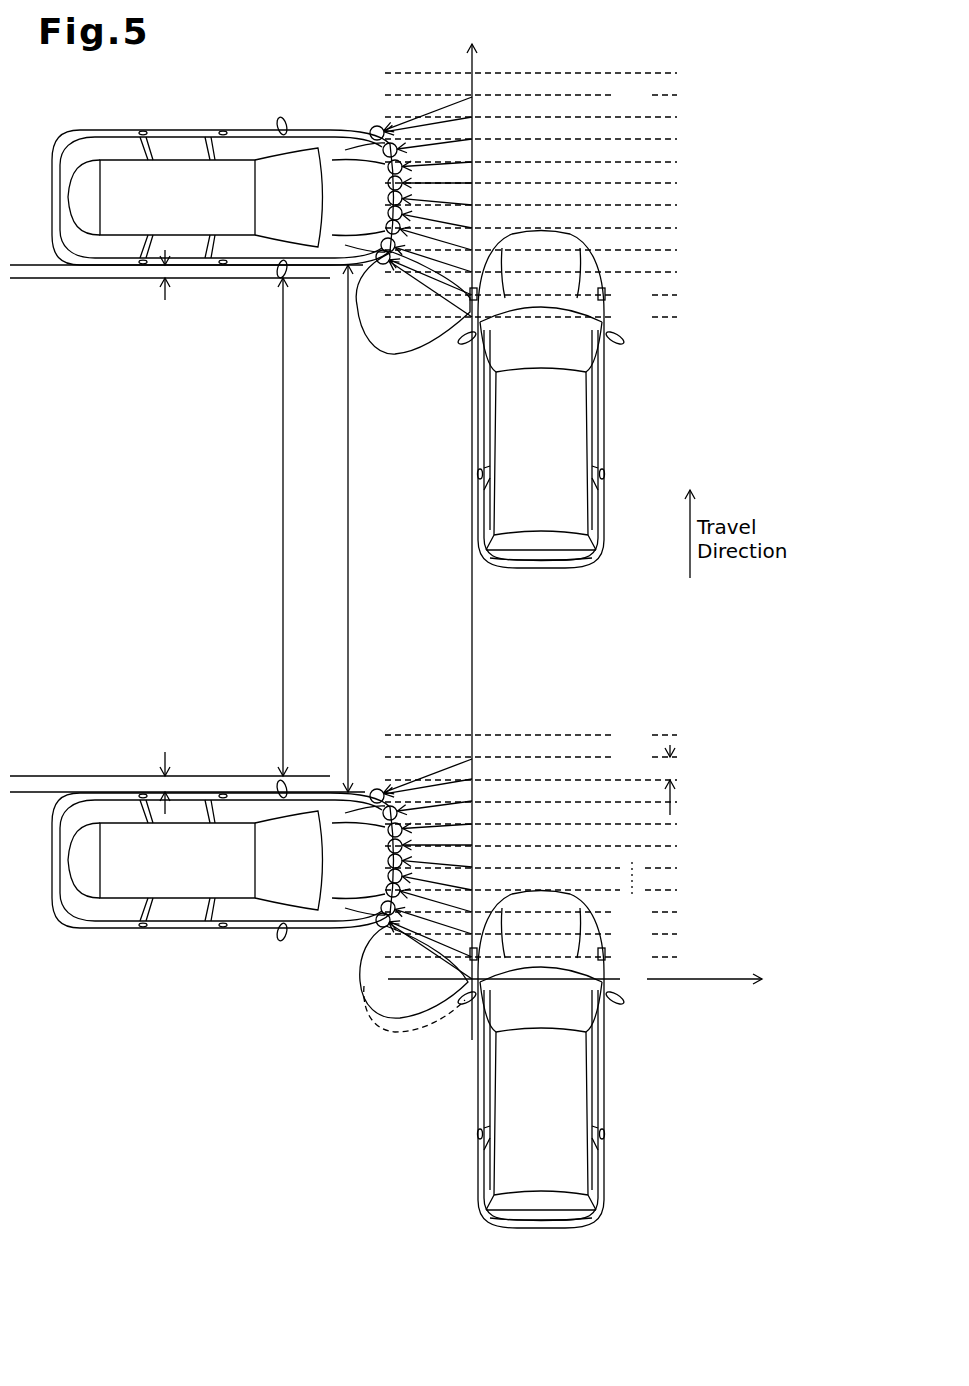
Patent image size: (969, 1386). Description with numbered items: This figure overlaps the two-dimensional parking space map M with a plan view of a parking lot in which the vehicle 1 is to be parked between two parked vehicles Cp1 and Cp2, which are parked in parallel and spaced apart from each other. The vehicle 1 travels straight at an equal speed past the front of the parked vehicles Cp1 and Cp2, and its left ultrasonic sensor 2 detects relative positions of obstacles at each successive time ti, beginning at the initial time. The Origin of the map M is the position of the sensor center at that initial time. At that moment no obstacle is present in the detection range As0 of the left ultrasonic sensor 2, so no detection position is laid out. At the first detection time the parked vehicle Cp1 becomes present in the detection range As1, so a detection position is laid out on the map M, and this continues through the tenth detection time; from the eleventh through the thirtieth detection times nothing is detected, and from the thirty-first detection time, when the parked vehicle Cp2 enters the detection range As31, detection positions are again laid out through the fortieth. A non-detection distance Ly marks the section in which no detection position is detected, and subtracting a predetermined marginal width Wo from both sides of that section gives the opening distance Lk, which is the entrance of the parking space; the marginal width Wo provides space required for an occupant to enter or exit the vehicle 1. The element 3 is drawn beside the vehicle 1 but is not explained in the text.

The vehicle 1 is at (608, 447).
The left ultrasonic sensor 2 is at (490, 297).
The side marker / sensor 3 is at (606, 300).
The parking space map M is at (734, 77).
The parked vehicle Cp1 is at (240, 927).
The parked vehicle Cp2 is at (180, 130).
The detection range As31 is at (394, 354).
The detection range As1 is at (360, 942).
The detection range As0 is at (371, 1031).
The origin Origin is at (462, 990).
The marginal width Wo is at (187, 532).
The opening distance Lk is at (265, 527).
The non-detection distance Ly is at (330, 528).
The time ti is at (681, 780).